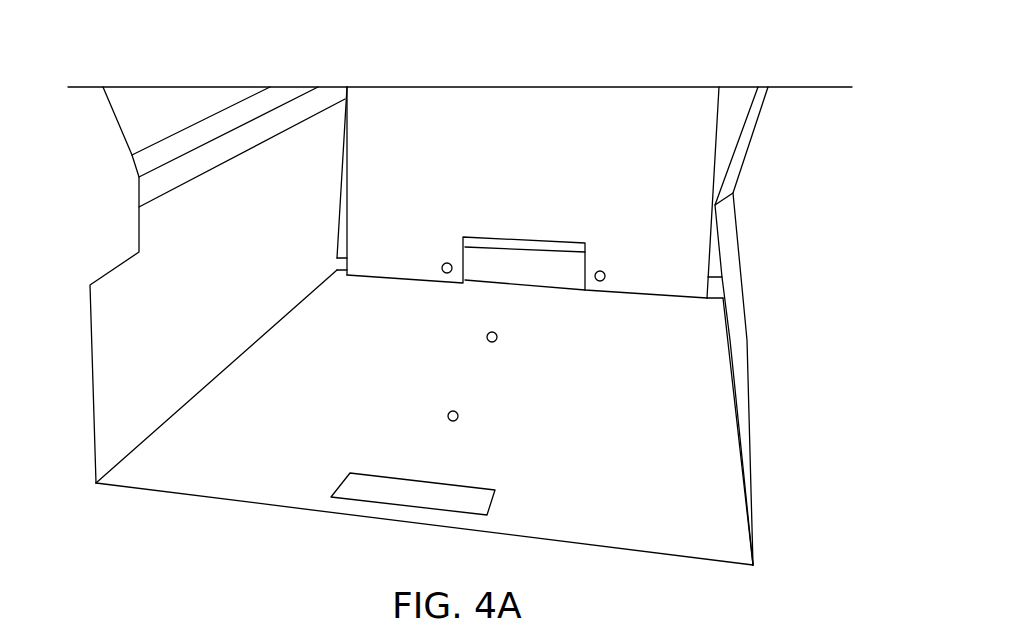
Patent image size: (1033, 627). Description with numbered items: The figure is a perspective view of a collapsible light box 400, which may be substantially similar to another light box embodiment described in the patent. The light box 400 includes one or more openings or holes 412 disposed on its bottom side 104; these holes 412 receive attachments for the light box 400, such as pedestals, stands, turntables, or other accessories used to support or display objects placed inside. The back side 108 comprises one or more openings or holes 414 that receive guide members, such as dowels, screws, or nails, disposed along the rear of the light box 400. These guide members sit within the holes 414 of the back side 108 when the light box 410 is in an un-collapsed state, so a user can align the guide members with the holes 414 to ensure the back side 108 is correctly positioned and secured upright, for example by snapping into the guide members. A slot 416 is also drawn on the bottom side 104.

The collapsible light box 400 is at (108, 85).
The bottom side 104 is at (160, 495).
The back side 108 is at (438, 119).
The light box 410 is at (80, 626).
The holes 412 is at (480, 338).
The holes 414 is at (595, 263).
The slot 416 is at (357, 500).